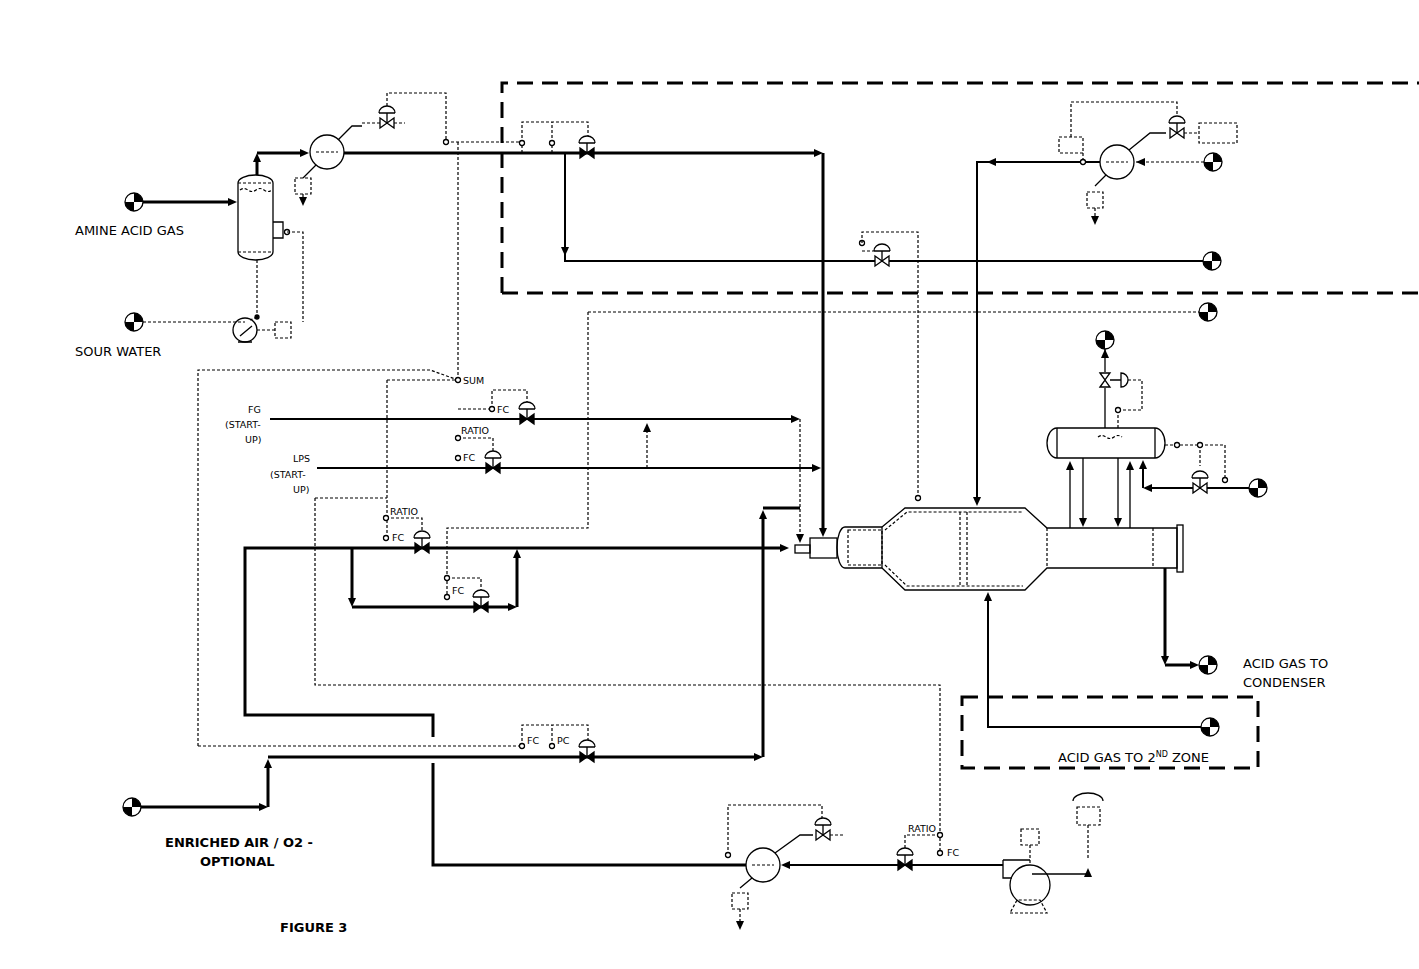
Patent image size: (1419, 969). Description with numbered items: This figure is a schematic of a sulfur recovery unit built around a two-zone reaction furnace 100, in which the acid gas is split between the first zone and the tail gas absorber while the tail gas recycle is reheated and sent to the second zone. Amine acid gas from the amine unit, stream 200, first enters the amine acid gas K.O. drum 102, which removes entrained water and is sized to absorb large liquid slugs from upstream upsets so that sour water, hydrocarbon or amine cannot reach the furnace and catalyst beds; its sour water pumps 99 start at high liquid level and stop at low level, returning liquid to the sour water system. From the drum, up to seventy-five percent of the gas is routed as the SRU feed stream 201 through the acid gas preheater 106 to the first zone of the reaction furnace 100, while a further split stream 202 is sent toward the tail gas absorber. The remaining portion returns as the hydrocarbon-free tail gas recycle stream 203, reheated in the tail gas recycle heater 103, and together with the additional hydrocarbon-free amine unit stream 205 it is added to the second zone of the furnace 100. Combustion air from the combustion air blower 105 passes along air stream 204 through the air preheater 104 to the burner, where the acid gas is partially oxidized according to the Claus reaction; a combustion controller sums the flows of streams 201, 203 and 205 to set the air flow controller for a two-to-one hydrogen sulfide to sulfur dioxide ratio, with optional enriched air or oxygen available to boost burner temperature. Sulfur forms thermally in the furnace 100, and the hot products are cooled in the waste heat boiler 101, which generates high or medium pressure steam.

The sour water pumps 99 is at (234, 304).
The reaction furnace 100 is at (901, 504).
The waste heat boiler 101 is at (1075, 426).
The amine acid gas K.O. drum 102 is at (246, 164).
The tail gas recycle heater 103 is at (1128, 142).
The air preheater 104 is at (321, 134).
The combustion air blower 105 is at (1013, 860).
The acid gas preheater 106 is at (770, 848).
The amine acid gas stream 200 is at (200, 194).
The SRU feed stream 201 is at (738, 150).
The acid gas stream to TGU absorber 202 is at (660, 256).
The tail gas recycle stream 203 is at (975, 160).
The preheated air stream 204 is at (557, 858).
The upstream amine unit stream 205 is at (985, 644).